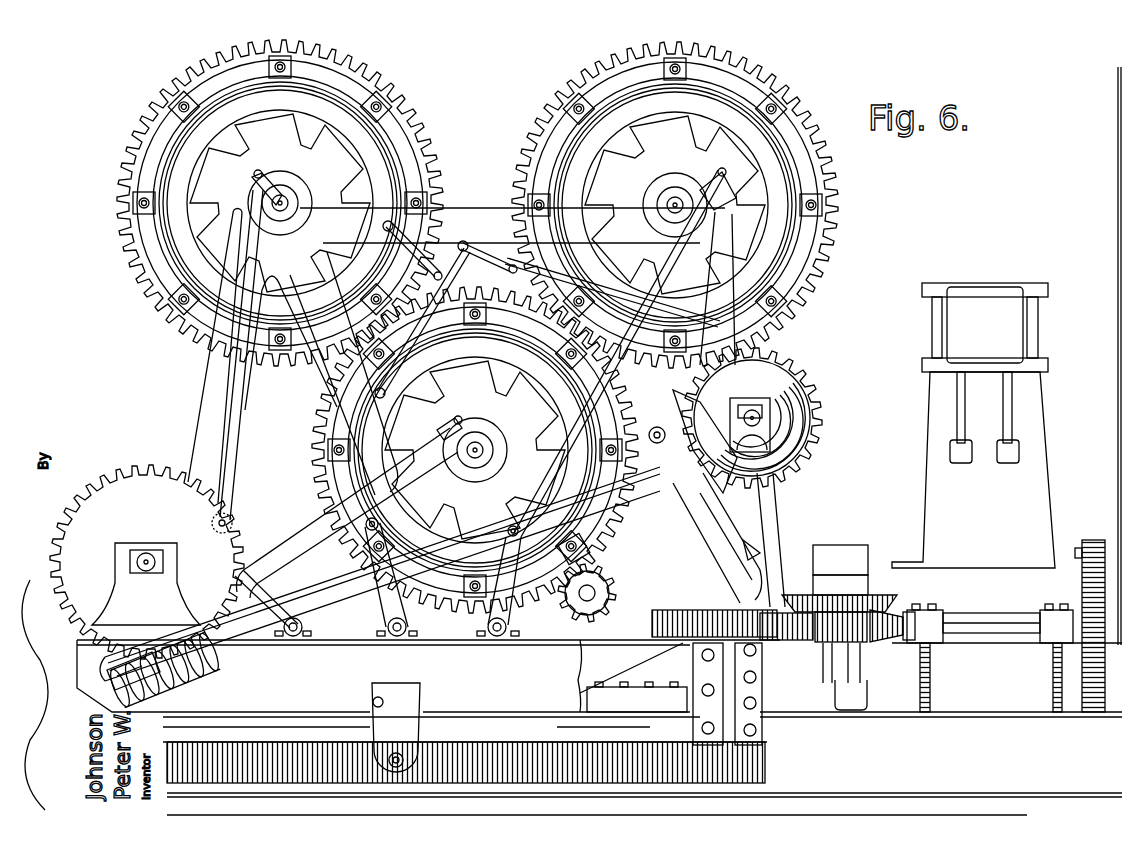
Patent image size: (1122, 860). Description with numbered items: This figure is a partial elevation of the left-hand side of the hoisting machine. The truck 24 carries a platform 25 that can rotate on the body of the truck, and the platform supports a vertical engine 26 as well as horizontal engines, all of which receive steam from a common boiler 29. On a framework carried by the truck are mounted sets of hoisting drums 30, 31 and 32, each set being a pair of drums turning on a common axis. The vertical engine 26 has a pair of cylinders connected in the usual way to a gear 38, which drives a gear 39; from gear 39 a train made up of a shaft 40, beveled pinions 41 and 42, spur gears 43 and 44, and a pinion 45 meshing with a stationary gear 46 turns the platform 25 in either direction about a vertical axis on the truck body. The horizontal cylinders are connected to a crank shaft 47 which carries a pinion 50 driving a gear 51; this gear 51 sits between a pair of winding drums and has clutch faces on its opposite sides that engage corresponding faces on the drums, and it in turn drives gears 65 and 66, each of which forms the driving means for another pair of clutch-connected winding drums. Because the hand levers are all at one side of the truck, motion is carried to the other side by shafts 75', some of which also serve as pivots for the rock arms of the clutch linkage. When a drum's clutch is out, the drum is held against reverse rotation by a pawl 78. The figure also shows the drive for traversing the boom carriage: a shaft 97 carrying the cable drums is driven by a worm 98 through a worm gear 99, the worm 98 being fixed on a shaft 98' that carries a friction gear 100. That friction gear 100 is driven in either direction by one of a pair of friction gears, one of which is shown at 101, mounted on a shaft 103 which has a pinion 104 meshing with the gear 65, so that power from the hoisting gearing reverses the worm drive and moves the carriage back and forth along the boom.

The truck 24 is at (838, 803).
The platform 25 is at (633, 633).
The vertical engine 26 is at (935, 476).
The boiler 29 is at (1116, 262).
The hoisting drums 30 is at (815, 173).
The hoisting drums 31 is at (337, 418).
The hoisting drums 32 is at (410, 157).
The gear 38 is at (1107, 537).
The gear 39 is at (1082, 550).
The shaft 40 is at (988, 622).
The beveled pinion 41 is at (890, 637).
The beveled pinion 42 is at (793, 593).
The spur gear 43 is at (825, 628).
The spur gear 44 is at (783, 643).
The pinion 45 is at (763, 761).
The stationary gear 46 is at (495, 760).
The crank shaft 47 is at (592, 592).
The pinion 50 is at (618, 580).
The gear 51 is at (612, 538).
The gear 65 is at (812, 122).
The gear 66 is at (413, 124).
The shafts 75' is at (398, 593).
The pawl 78 is at (372, 188).
The shaft 97 is at (148, 558).
The worm 98 is at (185, 670).
The shaft 98' is at (380, 574).
The worm gear 99 is at (143, 477).
The friction gear 100 is at (673, 391).
The friction gear 101 is at (800, 400).
The shaft 103 is at (760, 418).
The pinion 104 is at (805, 362).